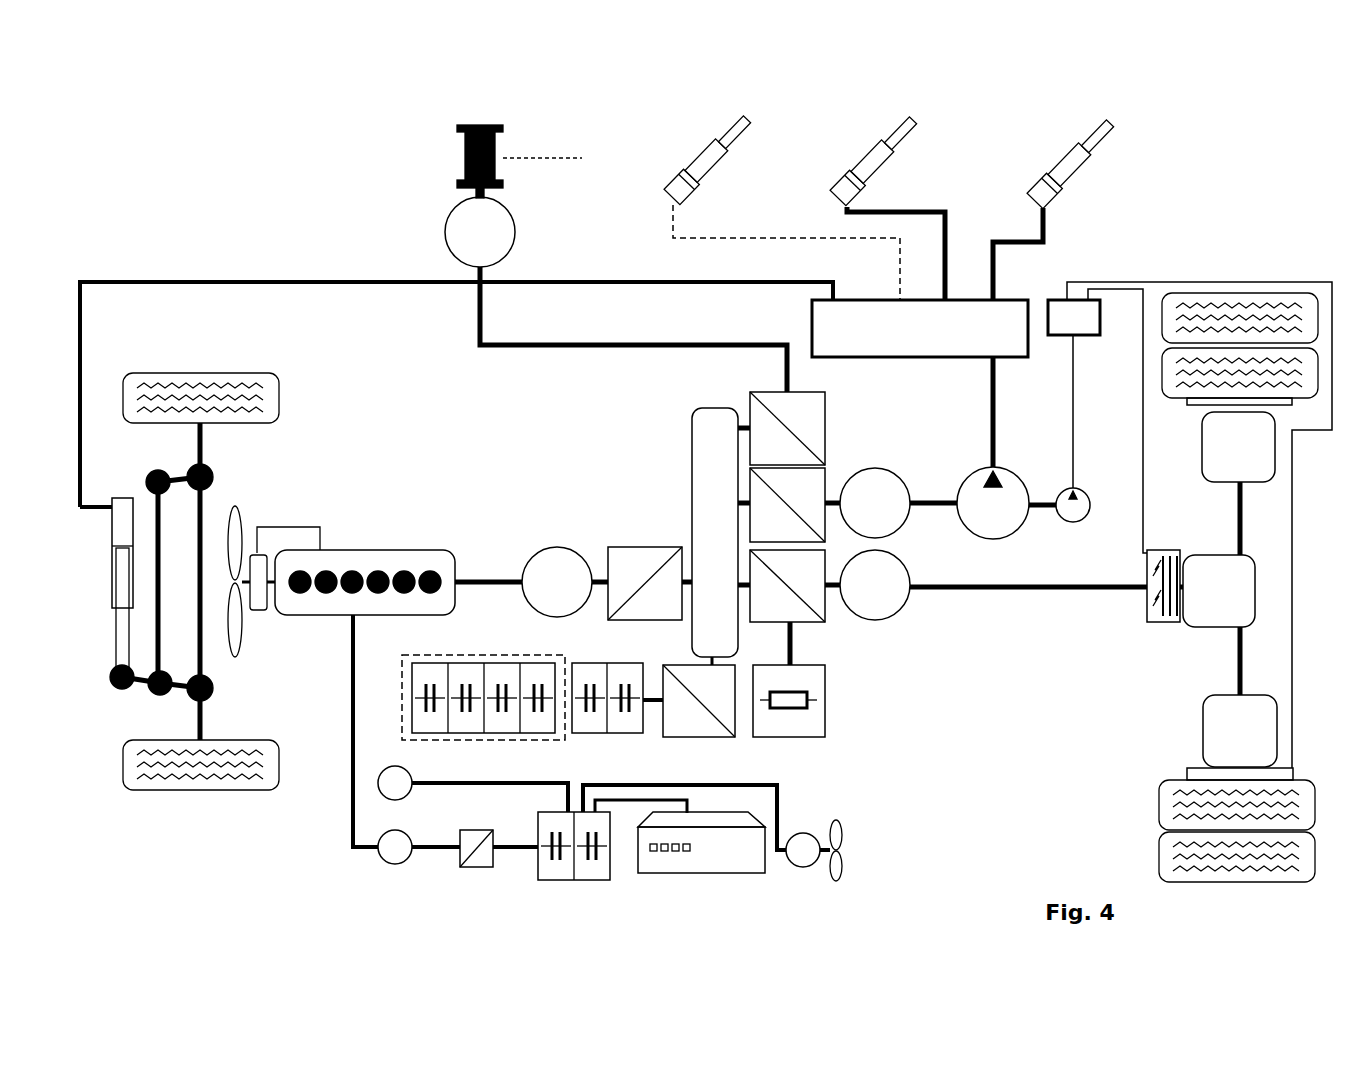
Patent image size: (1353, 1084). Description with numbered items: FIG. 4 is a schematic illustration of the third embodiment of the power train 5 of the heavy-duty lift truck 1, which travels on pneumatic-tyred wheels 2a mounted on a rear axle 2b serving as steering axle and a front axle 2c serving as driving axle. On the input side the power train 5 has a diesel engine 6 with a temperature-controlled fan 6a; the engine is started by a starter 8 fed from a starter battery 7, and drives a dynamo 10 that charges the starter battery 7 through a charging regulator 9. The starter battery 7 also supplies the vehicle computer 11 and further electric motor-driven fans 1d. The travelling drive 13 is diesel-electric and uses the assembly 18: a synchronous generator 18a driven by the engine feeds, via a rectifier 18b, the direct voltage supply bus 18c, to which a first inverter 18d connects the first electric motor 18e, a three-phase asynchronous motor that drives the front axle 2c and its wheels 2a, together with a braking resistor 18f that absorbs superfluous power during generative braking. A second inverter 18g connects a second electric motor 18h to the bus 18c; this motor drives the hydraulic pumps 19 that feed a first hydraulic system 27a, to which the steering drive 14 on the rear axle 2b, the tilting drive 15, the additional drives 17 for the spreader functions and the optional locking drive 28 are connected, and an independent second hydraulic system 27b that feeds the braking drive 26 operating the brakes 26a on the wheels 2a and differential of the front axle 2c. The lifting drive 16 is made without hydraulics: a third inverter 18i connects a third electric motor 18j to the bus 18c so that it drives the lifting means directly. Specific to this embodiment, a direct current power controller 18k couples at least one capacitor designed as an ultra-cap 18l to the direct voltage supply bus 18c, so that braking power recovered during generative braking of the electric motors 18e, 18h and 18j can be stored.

The heavy-duty lift truck 1 is at (145, 203).
The electric motor-driven fans 1d is at (848, 858).
The wheels 2a is at (283, 398).
The rear axle 2b is at (190, 800).
The front axle 2c is at (1247, 262).
The power train 5 is at (562, 442).
The diesel engine 6 is at (386, 619).
The temperature-controlled fan 6a is at (245, 505).
The starter battery 7 is at (537, 875).
The starter 8 is at (415, 778).
The charging regulator 9 is at (462, 864).
The dynamo 10 is at (383, 862).
The vehicle computer 11 is at (690, 872).
The travelling drive 13 is at (1031, 605).
The steering drive 14 is at (110, 572).
The tilting drive 15 is at (852, 158).
The lifting drive 16 is at (462, 155).
The additional drives 17 is at (1050, 163).
The assembly 18 is at (885, 715).
The synchronous generator 18a is at (560, 545).
The rectifier 18b is at (636, 541).
The direct voltage supply bus 18c is at (690, 483).
The first inverter 18d is at (827, 612).
The first electric motor 18e is at (905, 613).
The braking resistor 18f is at (816, 740).
The second inverter 18g is at (826, 487).
The second electric motor 18h is at (881, 468).
The third inverter 18i is at (748, 402).
The third electric motor 18j is at (445, 226).
The direct current power controller 18k is at (719, 740).
The ultra-cap 18l is at (620, 737).
The hydraulic pump 19 is at (978, 472).
The braking drive 26 is at (1112, 262).
The brakes 26a is at (1296, 410).
The first hydraulic system 27a is at (810, 326).
The second hydraulic system 27b is at (1086, 345).
The locking drive 28 is at (688, 158).